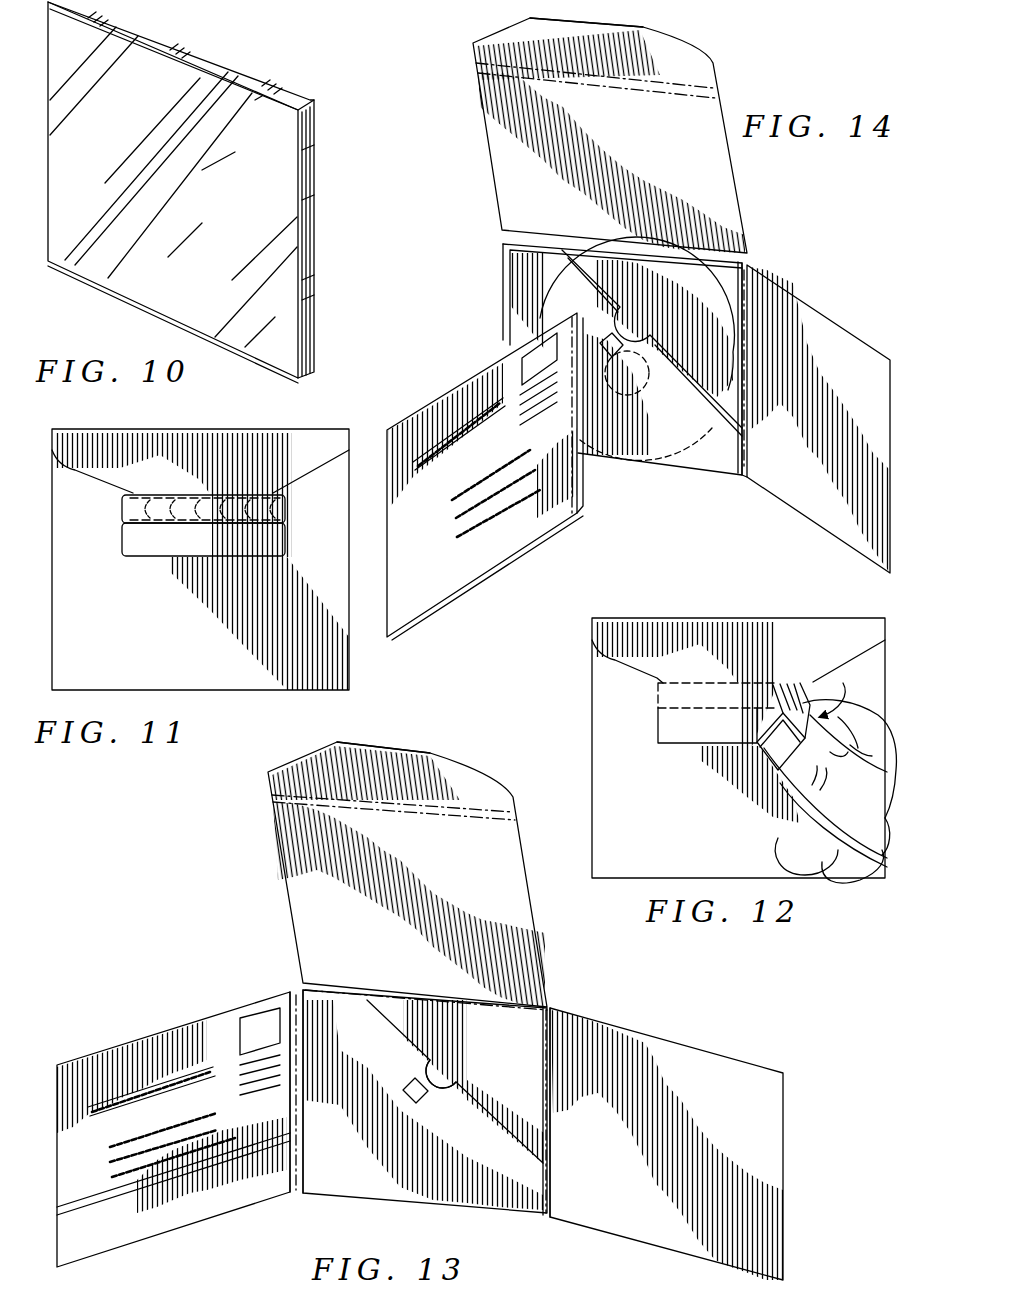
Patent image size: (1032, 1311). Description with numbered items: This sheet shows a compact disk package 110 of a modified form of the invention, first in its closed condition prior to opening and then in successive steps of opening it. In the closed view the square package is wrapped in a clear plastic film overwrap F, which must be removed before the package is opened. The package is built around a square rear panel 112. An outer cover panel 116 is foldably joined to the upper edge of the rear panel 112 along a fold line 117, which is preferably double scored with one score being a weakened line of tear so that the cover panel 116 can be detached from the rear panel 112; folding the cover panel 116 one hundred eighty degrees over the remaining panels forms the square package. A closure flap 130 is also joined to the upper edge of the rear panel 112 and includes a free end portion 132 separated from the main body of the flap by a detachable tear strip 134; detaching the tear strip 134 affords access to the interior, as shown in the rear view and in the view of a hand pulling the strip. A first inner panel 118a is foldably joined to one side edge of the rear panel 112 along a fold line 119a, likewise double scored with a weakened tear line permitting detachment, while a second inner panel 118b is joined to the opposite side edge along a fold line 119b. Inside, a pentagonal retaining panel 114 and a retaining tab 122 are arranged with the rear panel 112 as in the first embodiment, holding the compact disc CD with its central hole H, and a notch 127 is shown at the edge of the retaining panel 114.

In FIG. 10, the compact disk package 110 is at (310, 78).
In FIG. 10, the clear plastic film overwrap F is at (258, 108).
In FIG. 14, the rear panel 112 is at (717, 280).
In FIG. 11, the rear panel 112 is at (207, 633).
In FIG. 12, the rear panel 112 is at (738, 830).
In FIG. 13, the rear panel 112 is at (504, 1047).
In FIG. 14, the retaining panel 114 is at (715, 437).
In FIG. 13, the retaining panel 114 is at (368, 1153).
In FIG. 14, the outer cover panel 116 is at (642, 150).
In FIG. 13, the outer cover panel 116 is at (421, 897).
In FIG. 13, the fold line 117 is at (407, 997).
In FIG. 14, the first inner panel 118a is at (442, 587).
In FIG. 13, the first inner panel 118a is at (180, 1210).
In FIG. 14, the second inner panel 118b is at (852, 407).
In FIG. 13, the second inner panel 118b is at (692, 1160).
In FIG. 13, the fold line 119a is at (303, 1047).
In FIG. 13, the fold line 119b is at (550, 1075).
In FIG. 14, the retaining tab 122 is at (597, 343).
In FIG. 13, the retaining tab 122 is at (428, 1104).
In FIG. 13, the thumb notch 127 is at (445, 1078).
In FIG. 14, the closure flap 130 is at (680, 62).
In FIG. 11, the closure flap 130 is at (288, 447).
In FIG. 12, the closure flap 130 is at (770, 643).
In FIG. 13, the closure flap 130 is at (409, 783).
In FIG. 11, the free end portion 132 is at (285, 541).
In FIG. 12, the free end portion 132 is at (670, 730).
In FIG. 11, the detachable tear strip 134 is at (270, 512).
In FIG. 12, the detachable tear strip 134 is at (667, 693).
In FIG. 14, the compact disc CD is at (700, 330).
In FIG. 14, the center hole H is at (627, 384).